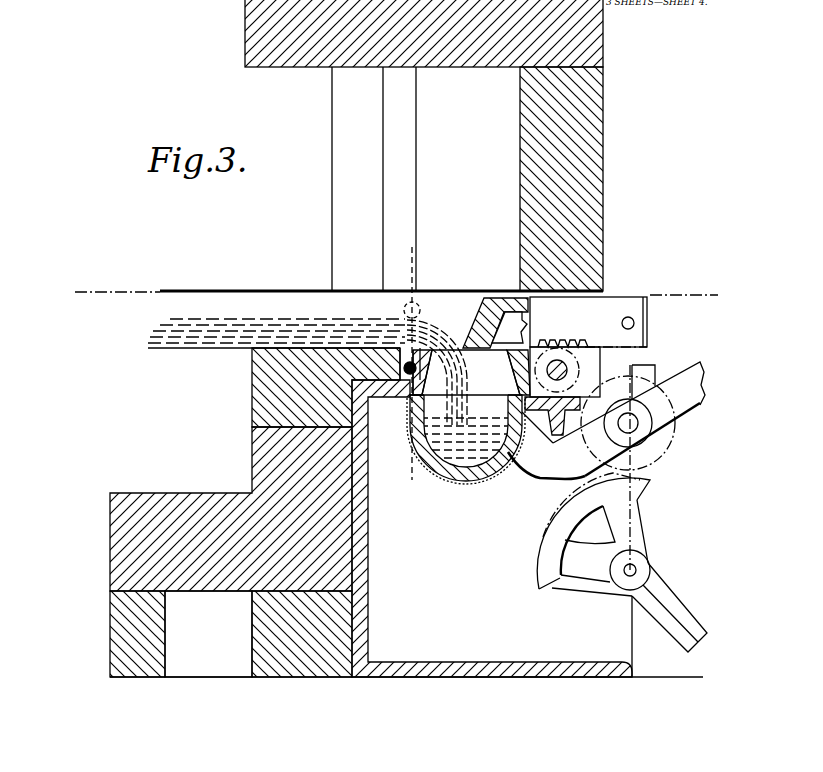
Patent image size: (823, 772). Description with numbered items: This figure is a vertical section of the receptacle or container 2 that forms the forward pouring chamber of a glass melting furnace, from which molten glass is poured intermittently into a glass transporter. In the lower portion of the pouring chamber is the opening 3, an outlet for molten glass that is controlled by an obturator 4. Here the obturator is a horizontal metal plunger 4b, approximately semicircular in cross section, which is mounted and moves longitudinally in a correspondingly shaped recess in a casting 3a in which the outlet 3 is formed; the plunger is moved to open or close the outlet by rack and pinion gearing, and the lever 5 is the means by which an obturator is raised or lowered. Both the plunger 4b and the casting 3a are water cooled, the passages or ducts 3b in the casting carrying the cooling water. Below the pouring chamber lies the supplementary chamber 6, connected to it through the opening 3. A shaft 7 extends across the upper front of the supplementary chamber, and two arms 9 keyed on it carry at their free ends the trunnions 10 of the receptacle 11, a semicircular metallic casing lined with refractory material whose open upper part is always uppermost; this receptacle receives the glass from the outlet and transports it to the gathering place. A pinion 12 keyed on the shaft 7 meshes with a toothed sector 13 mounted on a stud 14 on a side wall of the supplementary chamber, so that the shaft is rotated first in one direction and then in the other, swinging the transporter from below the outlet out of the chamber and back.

The receptacle or container 2 is at (530, 255).
The opening 3 is at (471, 372).
The casting 3a is at (386, 397).
The passages or ducts 3b is at (398, 352).
The obturator 4 is at (393, 296).
The horizontal metal plunger 4b is at (588, 322).
The lever 5 is at (408, 368).
The supplementary chamber 6 is at (406, 528).
The shaft 7 is at (630, 425).
The arms 9 is at (546, 445).
The trunnions 10 is at (455, 479).
The receptacle 11 is at (480, 481).
The pinion 12 is at (680, 433).
The toothed sector 13 is at (538, 552).
The stud 14 is at (636, 568).